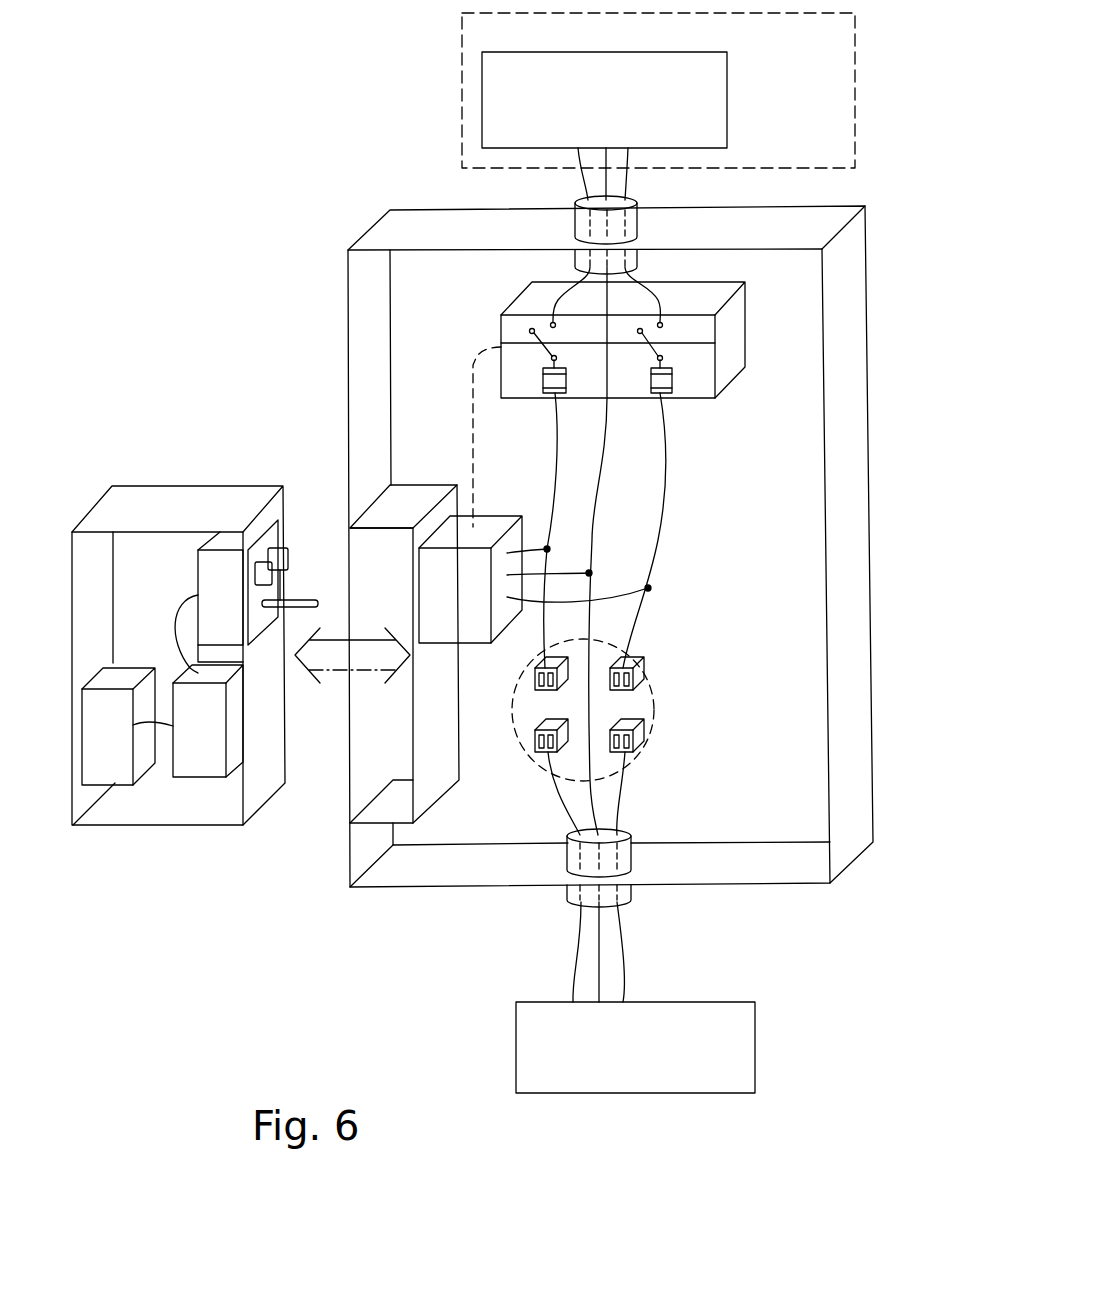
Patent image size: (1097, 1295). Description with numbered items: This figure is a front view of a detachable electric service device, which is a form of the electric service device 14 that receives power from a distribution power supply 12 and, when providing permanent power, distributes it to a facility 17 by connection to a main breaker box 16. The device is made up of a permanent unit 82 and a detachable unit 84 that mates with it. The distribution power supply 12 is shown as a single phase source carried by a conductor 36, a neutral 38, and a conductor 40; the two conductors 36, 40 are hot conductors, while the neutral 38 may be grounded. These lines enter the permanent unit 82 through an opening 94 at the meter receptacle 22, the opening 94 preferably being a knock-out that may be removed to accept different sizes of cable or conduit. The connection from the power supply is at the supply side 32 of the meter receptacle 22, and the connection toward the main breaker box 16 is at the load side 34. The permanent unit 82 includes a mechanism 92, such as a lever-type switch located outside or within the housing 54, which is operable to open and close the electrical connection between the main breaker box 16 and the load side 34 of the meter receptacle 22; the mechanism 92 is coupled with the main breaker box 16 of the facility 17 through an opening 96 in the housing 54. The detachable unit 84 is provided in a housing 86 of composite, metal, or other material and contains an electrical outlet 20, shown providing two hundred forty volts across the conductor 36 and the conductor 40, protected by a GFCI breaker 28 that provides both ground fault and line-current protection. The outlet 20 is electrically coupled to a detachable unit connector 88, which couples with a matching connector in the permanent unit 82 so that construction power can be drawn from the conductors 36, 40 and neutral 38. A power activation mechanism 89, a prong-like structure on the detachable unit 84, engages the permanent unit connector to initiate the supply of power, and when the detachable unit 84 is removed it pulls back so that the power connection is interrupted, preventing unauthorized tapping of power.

The distribution power supply 12 is at (757, 1063).
The electric service device 14 is at (897, 327).
The main breaker box 16 is at (727, 118).
The facility 17 is at (460, 38).
The electrical outlet 20 is at (123, 773).
The meter receptacle 22 is at (655, 722).
The GFCI breaker 28 is at (203, 772).
The supply side 32 is at (643, 783).
The load side 34 is at (645, 640).
The conductor 36 is at (627, 180).
The neutral 38 is at (608, 156).
The conductor 40 is at (585, 180).
The housing 54 is at (827, 757).
The permanent unit 82 is at (348, 367).
The detachable unit 84 is at (182, 508).
The housing 86 is at (72, 607).
The detachable unit connector 88 is at (273, 537).
The power activation mechanism 89 is at (312, 598).
The mechanism 92 is at (728, 363).
The opening 94 is at (637, 878).
The opening 96 is at (637, 239).